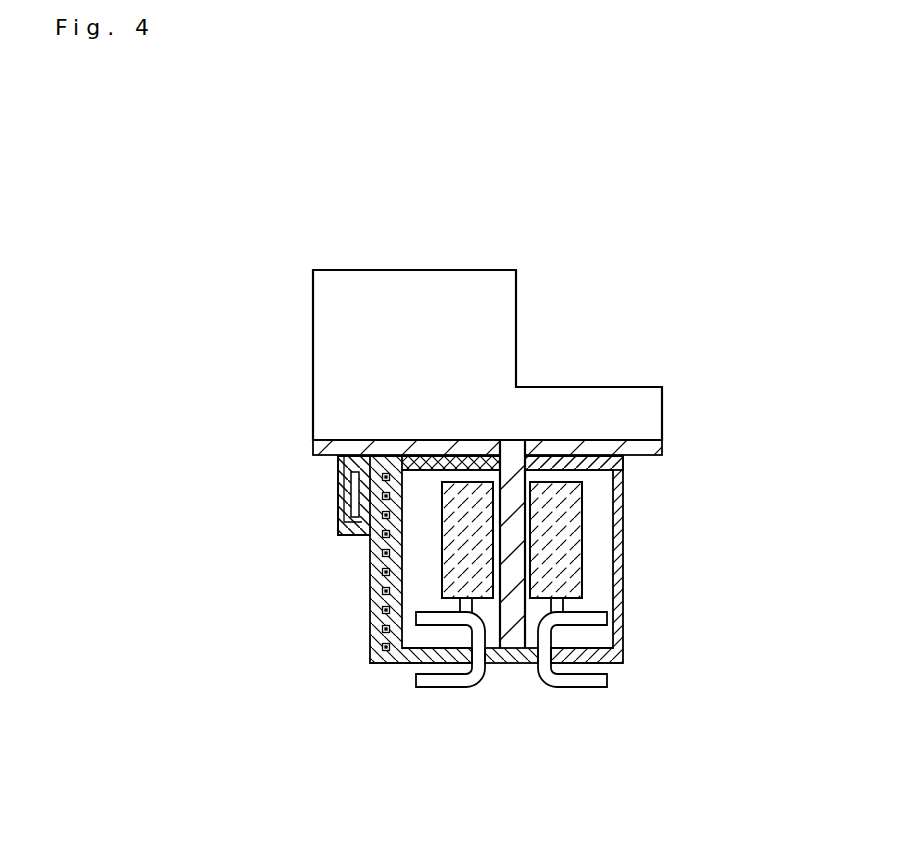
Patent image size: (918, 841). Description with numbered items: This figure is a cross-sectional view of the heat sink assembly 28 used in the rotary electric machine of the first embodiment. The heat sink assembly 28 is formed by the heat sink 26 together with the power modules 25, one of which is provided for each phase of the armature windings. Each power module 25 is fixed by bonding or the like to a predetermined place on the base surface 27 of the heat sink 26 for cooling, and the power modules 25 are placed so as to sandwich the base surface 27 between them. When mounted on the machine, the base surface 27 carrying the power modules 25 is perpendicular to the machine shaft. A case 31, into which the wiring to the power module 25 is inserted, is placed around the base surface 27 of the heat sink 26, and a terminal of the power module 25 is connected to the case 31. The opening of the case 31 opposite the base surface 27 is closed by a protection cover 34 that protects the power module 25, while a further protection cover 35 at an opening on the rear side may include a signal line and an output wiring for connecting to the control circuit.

The power module 25 is at (563, 553).
The heat sink 26 is at (328, 321).
The base surface 27 is at (508, 630).
The heat sink assembly 28 is at (292, 446).
The case 31 is at (623, 469).
The protection cover 34 is at (623, 517).
The protection cover 35 is at (350, 486).